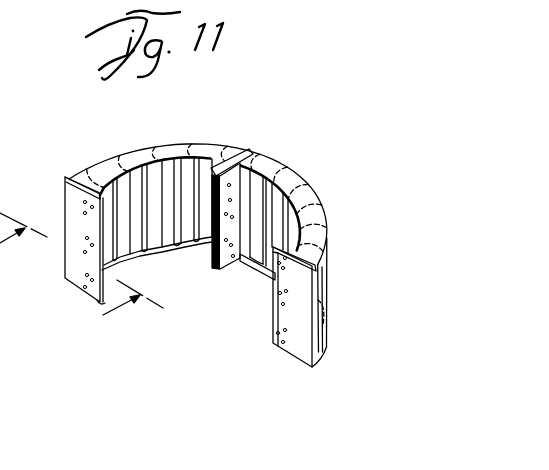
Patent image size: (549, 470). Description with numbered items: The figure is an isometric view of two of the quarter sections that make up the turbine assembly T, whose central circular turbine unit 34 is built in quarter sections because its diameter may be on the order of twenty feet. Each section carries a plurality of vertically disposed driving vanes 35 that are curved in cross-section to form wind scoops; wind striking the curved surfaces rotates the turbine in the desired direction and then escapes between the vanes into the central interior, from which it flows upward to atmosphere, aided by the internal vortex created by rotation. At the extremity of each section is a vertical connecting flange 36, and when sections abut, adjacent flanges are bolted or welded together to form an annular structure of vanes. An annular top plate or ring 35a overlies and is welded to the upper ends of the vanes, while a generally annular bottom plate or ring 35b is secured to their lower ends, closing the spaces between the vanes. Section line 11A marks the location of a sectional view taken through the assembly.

The turbine unit 34 is at (115, 145).
The turbine assembly T is at (290, 172).
The vanes 35 is at (183, 218).
The top plate or ring 35a is at (209, 150).
The bottom plate or ring 35b is at (257, 267).
The connecting flange 36 is at (97, 303).
The section line 11A is at (81, 284).